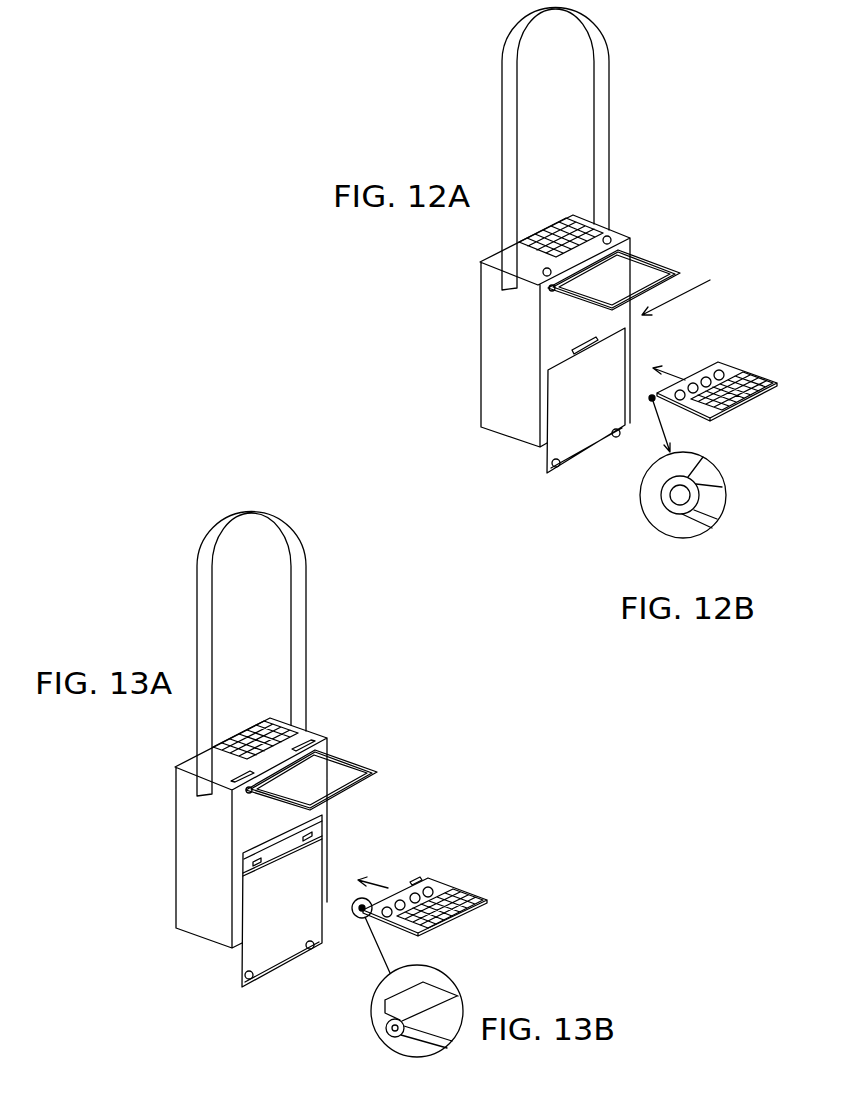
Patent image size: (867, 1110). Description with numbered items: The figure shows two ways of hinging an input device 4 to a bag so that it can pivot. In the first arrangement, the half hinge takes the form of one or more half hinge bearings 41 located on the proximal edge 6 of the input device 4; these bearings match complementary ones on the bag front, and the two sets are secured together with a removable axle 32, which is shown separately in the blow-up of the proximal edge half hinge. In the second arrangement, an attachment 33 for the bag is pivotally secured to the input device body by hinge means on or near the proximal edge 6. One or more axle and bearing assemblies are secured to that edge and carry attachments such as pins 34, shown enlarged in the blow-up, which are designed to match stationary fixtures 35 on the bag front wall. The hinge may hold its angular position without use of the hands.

In FIG. 12A, the removable axle 32 is at (703, 276).
In FIG. 12A, the proximal edge 6 is at (698, 365).
In FIG. 13A, the proximal edge 6 is at (395, 888).
In FIG. 12B, the half hinge bearings 41 is at (678, 494).
In FIG. 13A, the stationary fixtures 35 is at (243, 880).
In FIG. 13A, the input device 4 is at (455, 920).
In FIG. 13A, the attachment 33 is at (417, 880).
In FIG. 13B, the pins 34 is at (410, 998).